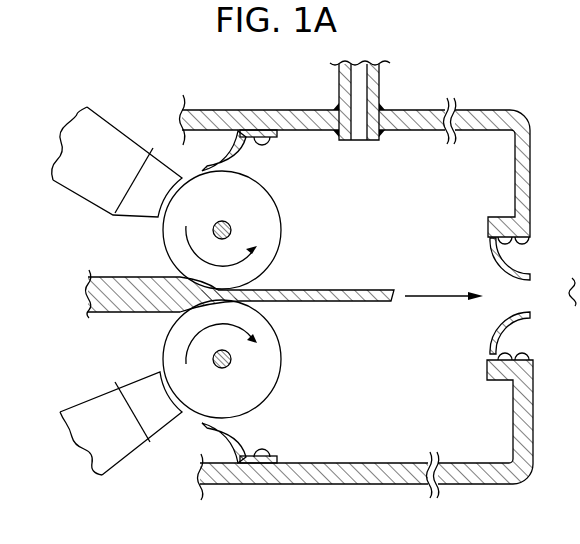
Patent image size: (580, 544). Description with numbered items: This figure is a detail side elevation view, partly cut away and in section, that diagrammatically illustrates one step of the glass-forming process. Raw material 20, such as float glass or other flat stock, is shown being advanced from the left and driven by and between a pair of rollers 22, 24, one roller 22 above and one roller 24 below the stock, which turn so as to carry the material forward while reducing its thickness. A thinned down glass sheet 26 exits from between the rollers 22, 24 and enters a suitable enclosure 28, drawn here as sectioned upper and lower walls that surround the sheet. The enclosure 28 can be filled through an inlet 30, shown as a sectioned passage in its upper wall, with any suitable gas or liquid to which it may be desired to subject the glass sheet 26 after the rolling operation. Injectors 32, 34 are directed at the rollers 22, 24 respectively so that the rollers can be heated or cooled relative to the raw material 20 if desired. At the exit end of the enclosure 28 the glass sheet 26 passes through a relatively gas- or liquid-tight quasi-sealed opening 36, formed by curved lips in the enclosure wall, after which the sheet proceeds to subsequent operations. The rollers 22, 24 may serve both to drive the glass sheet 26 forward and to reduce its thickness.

The raw material 20 is at (139, 277).
The roller 22 is at (269, 213).
The roller 24 is at (266, 369).
The thinned down glass sheet 26 is at (325, 290).
The enclosure 28 is at (518, 114).
The inlet 30 is at (338, 79).
The injector 32 is at (110, 175).
The injector 34 is at (120, 436).
The quasi-sealed opening 36 is at (488, 258).